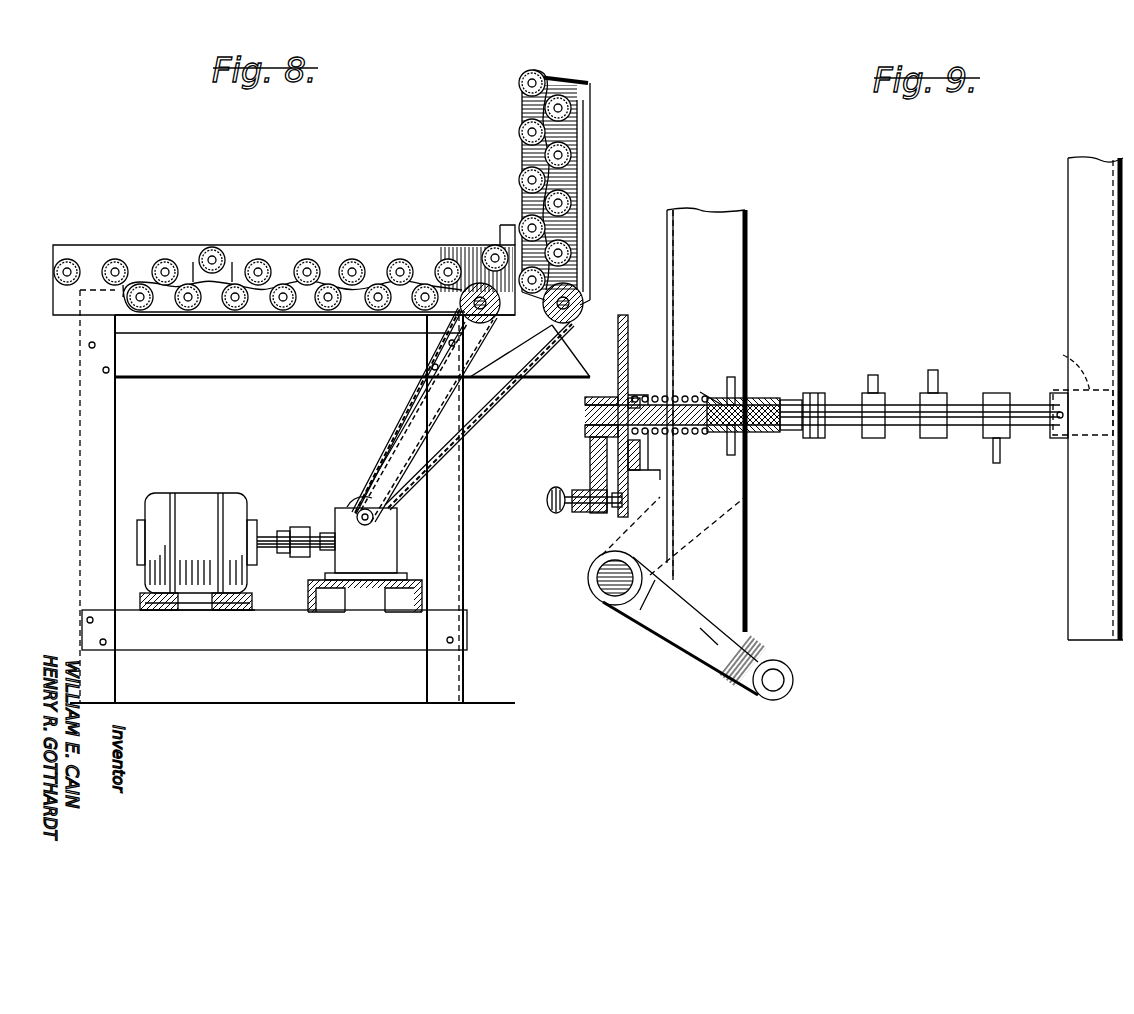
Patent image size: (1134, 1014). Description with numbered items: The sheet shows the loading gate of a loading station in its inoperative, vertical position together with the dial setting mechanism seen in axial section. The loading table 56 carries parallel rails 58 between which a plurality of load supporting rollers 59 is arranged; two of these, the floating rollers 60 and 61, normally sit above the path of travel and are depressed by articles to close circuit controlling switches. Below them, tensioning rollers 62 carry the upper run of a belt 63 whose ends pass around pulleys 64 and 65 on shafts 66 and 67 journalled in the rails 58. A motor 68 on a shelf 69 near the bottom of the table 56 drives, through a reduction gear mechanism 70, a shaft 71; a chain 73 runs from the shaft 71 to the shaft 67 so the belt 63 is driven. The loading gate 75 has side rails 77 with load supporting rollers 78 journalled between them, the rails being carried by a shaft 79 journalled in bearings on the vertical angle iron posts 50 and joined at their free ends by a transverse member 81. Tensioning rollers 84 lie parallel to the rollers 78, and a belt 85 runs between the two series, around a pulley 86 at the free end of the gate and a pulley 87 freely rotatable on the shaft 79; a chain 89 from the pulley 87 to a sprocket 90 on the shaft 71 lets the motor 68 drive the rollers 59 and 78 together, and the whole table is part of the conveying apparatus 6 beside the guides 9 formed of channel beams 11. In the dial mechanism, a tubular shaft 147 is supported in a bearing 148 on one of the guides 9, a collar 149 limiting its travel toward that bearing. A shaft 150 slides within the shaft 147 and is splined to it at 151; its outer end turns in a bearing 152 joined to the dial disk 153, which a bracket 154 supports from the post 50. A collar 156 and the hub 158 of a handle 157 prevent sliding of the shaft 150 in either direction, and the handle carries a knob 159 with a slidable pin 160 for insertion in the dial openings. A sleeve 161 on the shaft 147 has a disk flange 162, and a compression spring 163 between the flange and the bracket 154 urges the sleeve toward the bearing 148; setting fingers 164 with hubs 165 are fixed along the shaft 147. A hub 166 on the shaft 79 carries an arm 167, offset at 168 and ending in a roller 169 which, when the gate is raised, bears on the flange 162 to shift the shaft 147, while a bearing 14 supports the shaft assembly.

In FIG. 8, the conveyor frame 6 is at (345, 236).
In FIG. 8, the loading table 56 is at (466, 515).
In FIG. 8, the parallel rails 58 is at (278, 248).
In FIG. 8, the load supporting rollers 59 is at (155, 260).
In FIG. 8, the floating roller 60 is at (212, 247).
In FIG. 8, the floating roller 61 is at (495, 246).
In FIG. 8, the tensioning rollers 62 is at (192, 305).
In FIG. 8, the belt 63 is at (258, 335).
In FIG. 8, the pulley 64 is at (148, 308).
In FIG. 8, the pulley 65 is at (432, 347).
In FIG. 8, the shaft 66 is at (139, 312).
In FIG. 8, the shaft 67 is at (498, 297).
In FIG. 8, the motor 68 is at (202, 492).
In FIG. 8, the shelf 69 is at (254, 650).
In FIG. 8, the reduction gear mechanism 70 is at (352, 500).
In FIG. 8, the shaft 71 is at (365, 522).
In FIG. 8, the chain 73 is at (405, 404).
In FIG. 8, the loading gate 75 is at (513, 172).
In FIG. 8, the side rails 77 is at (521, 105).
In FIG. 8, the load supporting rollers 78 is at (520, 130).
In FIG. 8, the shaft 79 is at (575, 320).
In FIG. 9, the shaft 79 is at (606, 598).
In FIG. 8, the transverse member 81 is at (570, 77).
In FIG. 8, the tensioning rollers 84 is at (572, 150).
In FIG. 8, the belt 85 is at (583, 185).
In FIG. 8, the pulley 86 is at (590, 98).
In FIG. 8, the pulley 87 is at (585, 298).
In FIG. 8, the chain 89 is at (535, 390).
In FIG. 8, the sprocket 90 is at (356, 512).
In FIG. 9, the guides 9 is at (1059, 296).
In FIG. 9, the channel beams 11 is at (1075, 240).
In FIG. 9, the shaft bearing 14 is at (772, 355).
In FIG. 9, the vertical angle iron posts 50 is at (747, 308).
In FIG. 9, the tubular shaft 147 is at (968, 402).
In FIG. 9, the bearing 148 is at (1070, 393).
In FIG. 9, the collar 149 is at (1056, 440).
In FIG. 9, the shaft 150 is at (692, 434).
In FIG. 9, the spline 151 is at (773, 400).
In FIG. 9, the bearing 152 is at (655, 396).
In FIG. 9, the dial disk 153 is at (628, 330).
In FIG. 9, the bracket 154 is at (640, 395).
In FIG. 9, the collar 156 is at (668, 445).
In FIG. 9, the handle 157 is at (590, 466).
In FIG. 9, the hub 158 is at (601, 405).
In FIG. 9, the operating knob 159 is at (556, 514).
In FIG. 9, the slidable pin 160 is at (592, 514).
In FIG. 9, the sleeve 161 is at (768, 437).
In FIG. 9, the disk flange 162 is at (730, 376).
In FIG. 9, the compression spring 163 is at (724, 385).
In FIG. 9, the setting fingers 164 is at (933, 370).
In FIG. 9, the hub 165 is at (873, 440).
In FIG. 9, the hub 166 is at (590, 582).
In FIG. 9, the arm 167 is at (672, 592).
In FIG. 9, the offset 168 is at (763, 648).
In FIG. 9, the roller 169 is at (793, 680).